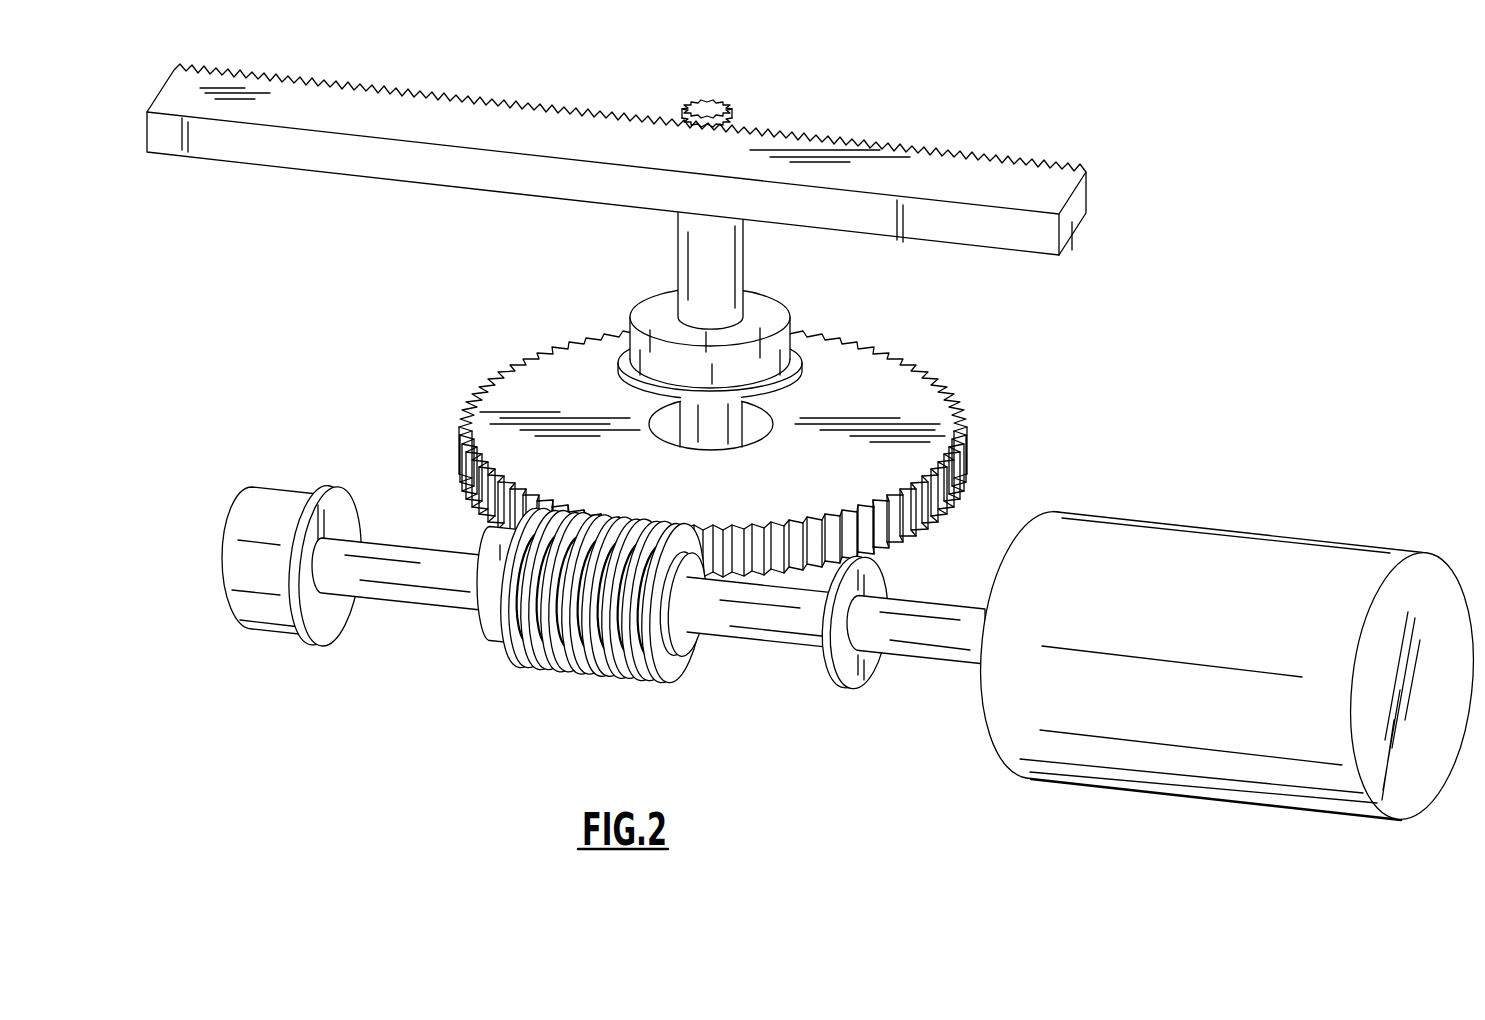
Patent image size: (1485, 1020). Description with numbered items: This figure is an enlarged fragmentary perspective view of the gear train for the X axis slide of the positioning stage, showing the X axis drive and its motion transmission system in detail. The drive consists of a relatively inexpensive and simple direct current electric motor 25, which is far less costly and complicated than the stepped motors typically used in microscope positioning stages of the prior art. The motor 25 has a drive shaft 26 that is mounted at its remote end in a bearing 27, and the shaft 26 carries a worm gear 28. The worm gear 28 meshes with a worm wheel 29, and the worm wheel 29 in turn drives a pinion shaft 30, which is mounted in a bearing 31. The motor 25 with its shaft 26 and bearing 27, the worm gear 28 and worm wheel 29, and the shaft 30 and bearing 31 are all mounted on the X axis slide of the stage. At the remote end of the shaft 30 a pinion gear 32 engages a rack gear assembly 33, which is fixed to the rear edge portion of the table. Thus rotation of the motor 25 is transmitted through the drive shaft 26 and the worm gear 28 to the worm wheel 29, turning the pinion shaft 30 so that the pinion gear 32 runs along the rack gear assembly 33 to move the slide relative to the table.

The direct current electric motor 25 is at (1242, 542).
The drive shaft 26 is at (812, 636).
The bearing 27 is at (260, 630).
The worm gear 28 is at (597, 672).
The worm wheel 29 is at (918, 384).
The pinion shaft 30 is at (690, 252).
The bearing 31 is at (652, 306).
The pinion gear 32 is at (726, 104).
The rack gear assembly 33 is at (451, 97).